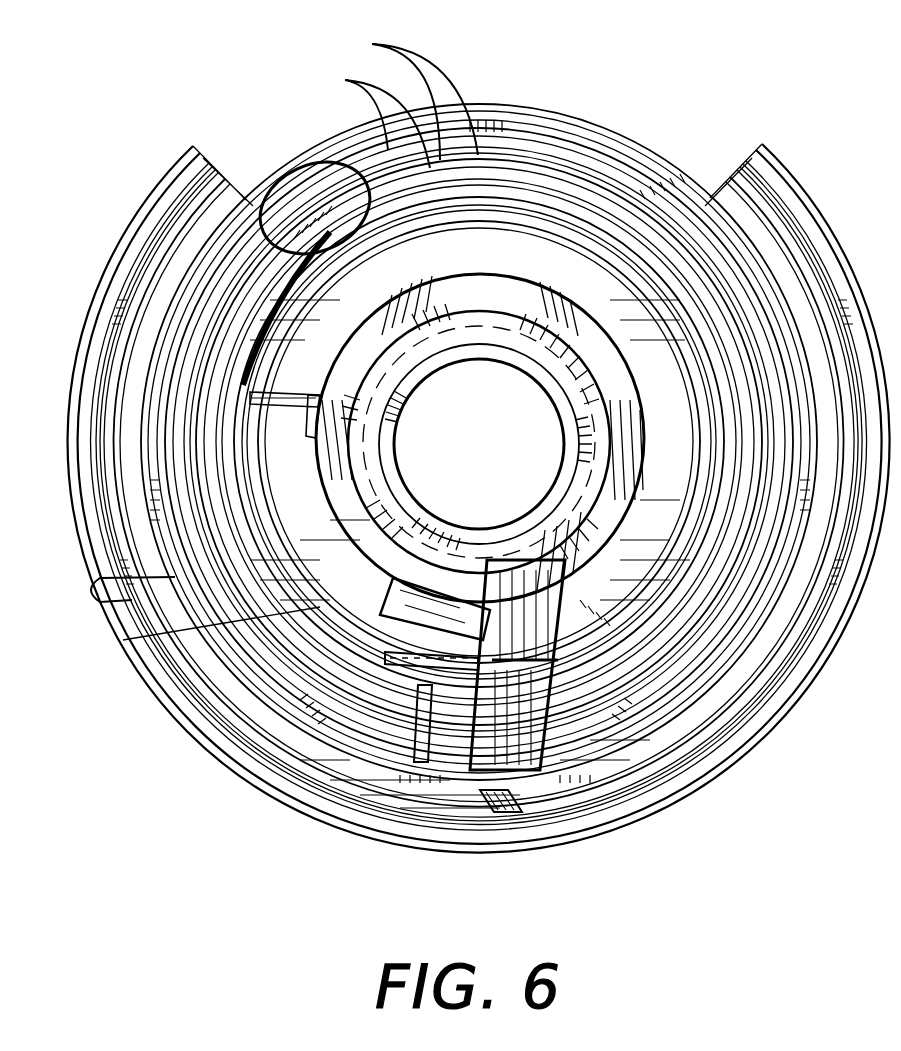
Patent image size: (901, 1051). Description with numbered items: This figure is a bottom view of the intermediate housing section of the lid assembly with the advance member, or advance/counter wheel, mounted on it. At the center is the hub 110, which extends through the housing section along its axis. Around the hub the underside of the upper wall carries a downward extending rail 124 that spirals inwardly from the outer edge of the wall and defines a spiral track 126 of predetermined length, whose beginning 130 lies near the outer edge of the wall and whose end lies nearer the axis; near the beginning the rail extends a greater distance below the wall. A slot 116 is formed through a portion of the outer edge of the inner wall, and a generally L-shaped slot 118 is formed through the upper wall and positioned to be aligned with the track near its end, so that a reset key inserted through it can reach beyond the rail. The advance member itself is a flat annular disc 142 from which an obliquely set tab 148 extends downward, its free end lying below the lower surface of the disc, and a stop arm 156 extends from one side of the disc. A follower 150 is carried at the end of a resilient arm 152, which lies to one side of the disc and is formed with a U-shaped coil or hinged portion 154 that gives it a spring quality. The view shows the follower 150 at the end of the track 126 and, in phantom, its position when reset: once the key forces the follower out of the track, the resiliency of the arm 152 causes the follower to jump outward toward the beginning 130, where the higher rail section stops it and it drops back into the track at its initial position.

The hub 110 is at (395, 452).
The slot 116 is at (395, 610).
The L-shaped slot 118 is at (422, 762).
The rail 124 is at (356, 115).
The spiral track 126 is at (393, 94).
The beginning of track 130 is at (517, 785).
The flat annular disc 142 is at (490, 250).
The obliquely set tab 148 is at (570, 325).
The follower 150 is at (410, 695).
The resilient arm 152 is at (102, 602).
The U-shaped coil or hinged portion 154 is at (330, 150).
The stop arm 156 is at (548, 668).